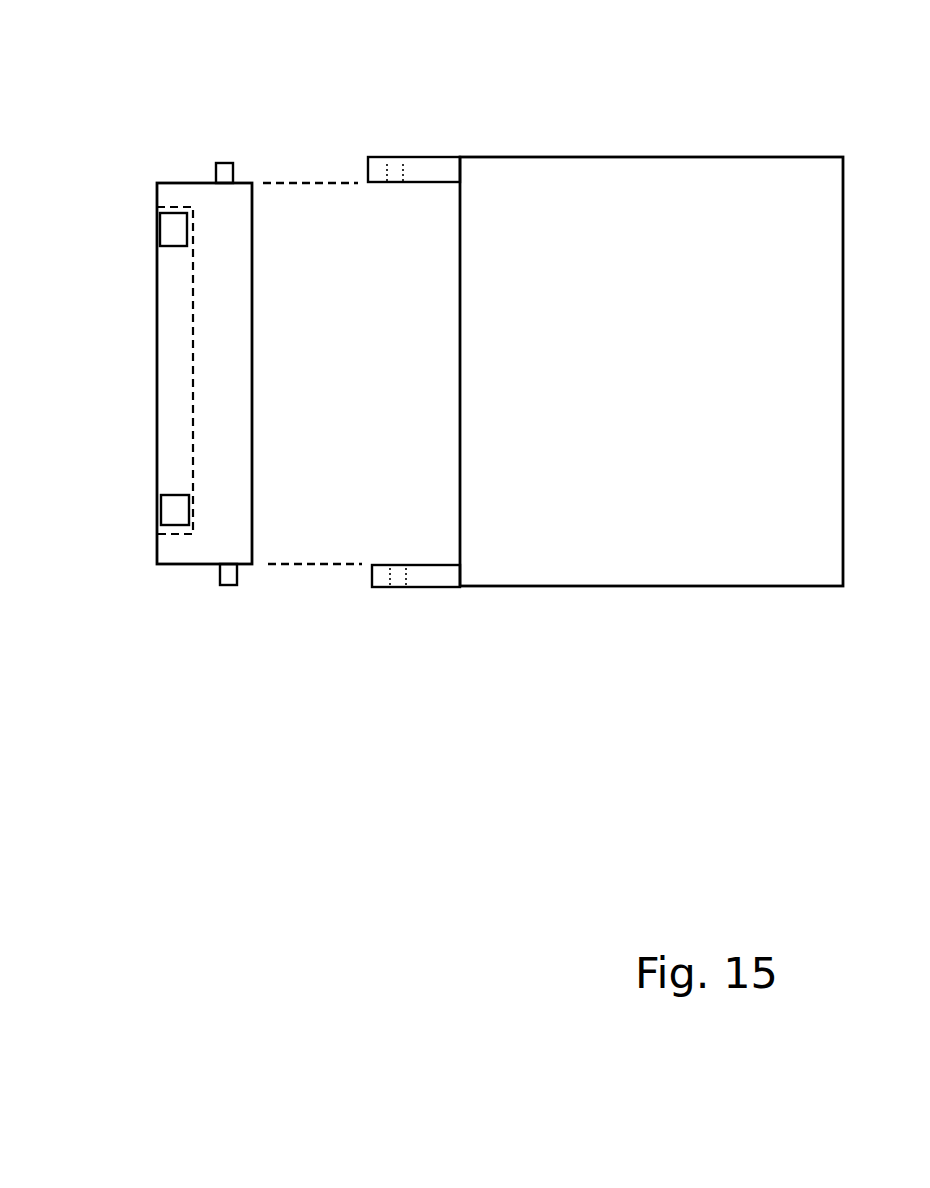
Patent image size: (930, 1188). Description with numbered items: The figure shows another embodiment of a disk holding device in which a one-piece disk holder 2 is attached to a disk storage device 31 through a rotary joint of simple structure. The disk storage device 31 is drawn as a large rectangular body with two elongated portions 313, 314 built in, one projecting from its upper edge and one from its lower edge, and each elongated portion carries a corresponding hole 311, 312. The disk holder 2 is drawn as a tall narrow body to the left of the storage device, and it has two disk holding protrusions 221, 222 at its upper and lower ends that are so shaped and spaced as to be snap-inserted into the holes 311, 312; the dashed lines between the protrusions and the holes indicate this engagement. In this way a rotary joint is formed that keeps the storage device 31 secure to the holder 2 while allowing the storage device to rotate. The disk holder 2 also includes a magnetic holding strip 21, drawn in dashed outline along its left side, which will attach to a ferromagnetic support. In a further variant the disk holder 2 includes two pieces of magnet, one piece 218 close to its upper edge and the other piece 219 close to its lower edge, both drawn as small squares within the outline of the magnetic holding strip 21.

The one-piece disk holder 2 is at (167, 183).
The magnetic holding strip 21 is at (168, 375).
The piece of magnet 218 is at (163, 229).
The piece of magnet 219 is at (170, 508).
The disk holding protrusion 221 is at (227, 163).
The disk holding protrusion 222 is at (228, 586).
The disk storage device 31 is at (746, 190).
The hole 311 is at (393, 167).
The hole 312 is at (393, 580).
The elongated portion 313 is at (448, 172).
The elongated portion 314 is at (437, 575).